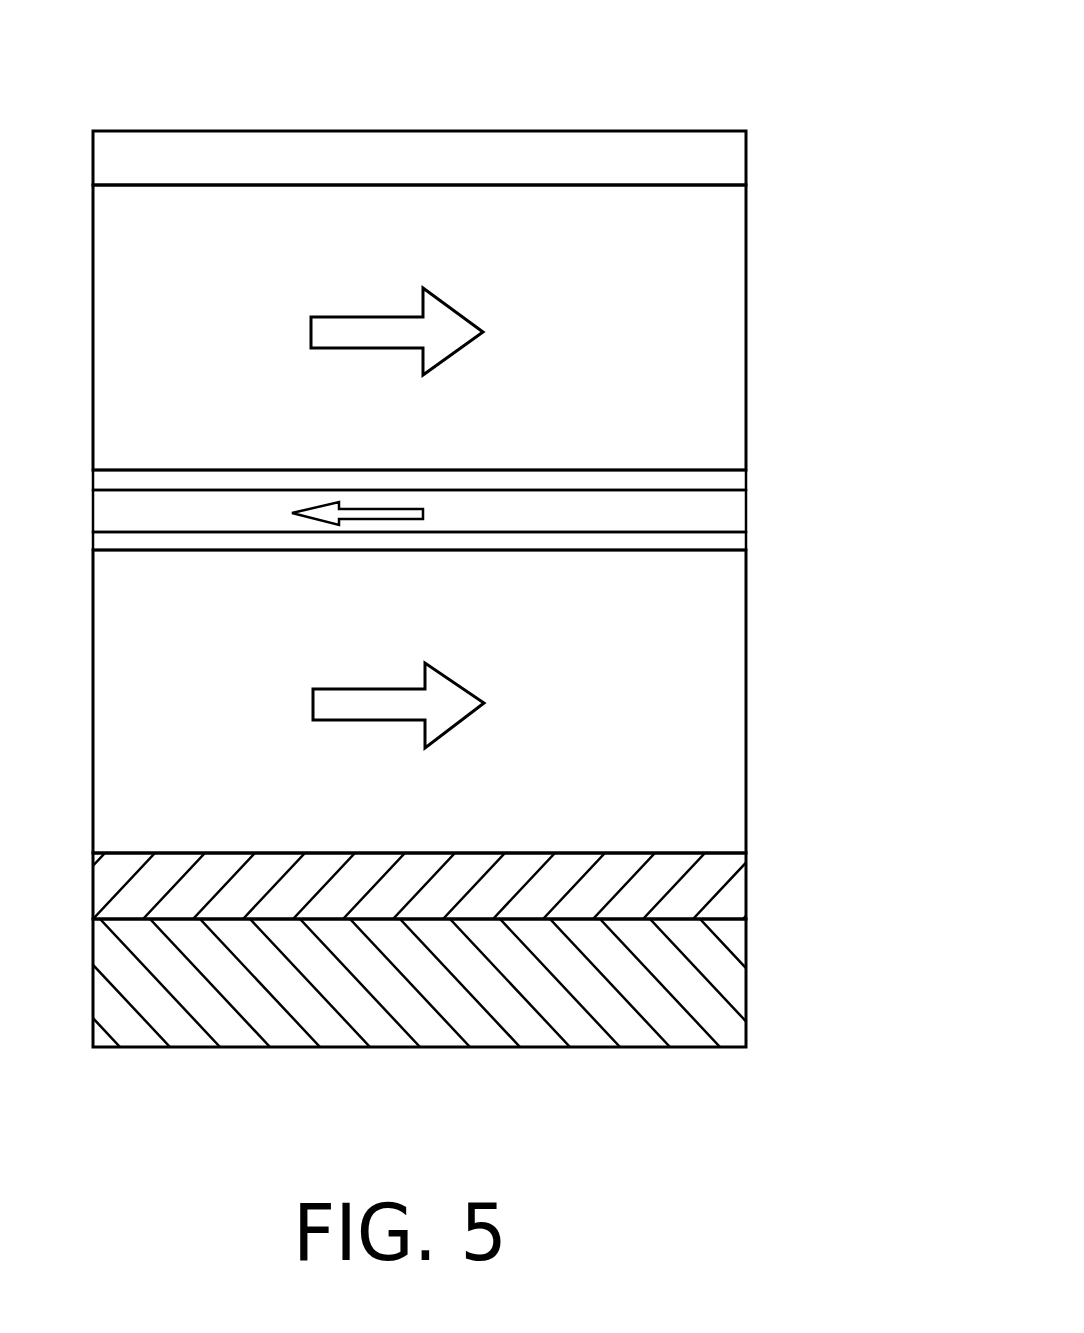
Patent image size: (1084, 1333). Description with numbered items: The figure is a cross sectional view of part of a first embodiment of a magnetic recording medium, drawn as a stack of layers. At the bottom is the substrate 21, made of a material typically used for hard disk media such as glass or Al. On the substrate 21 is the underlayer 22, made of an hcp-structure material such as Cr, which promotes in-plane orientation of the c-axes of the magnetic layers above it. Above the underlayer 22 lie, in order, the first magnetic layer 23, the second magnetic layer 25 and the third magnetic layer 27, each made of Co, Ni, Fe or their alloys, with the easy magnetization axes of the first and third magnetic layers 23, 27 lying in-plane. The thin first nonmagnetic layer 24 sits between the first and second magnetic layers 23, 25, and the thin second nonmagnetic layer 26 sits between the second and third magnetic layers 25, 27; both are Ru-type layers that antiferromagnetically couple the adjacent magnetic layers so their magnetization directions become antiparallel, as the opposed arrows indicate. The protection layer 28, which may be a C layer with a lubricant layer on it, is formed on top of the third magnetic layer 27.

The substrate 21 is at (747, 975).
The underlayer 22 is at (747, 880).
The first magnetic layer 23 is at (746, 690).
The first nonmagnetic layer 24 is at (766, 543).
The second magnetic layer 25 is at (746, 512).
The second nonmagnetic layer 26 is at (766, 475).
The third magnetic layer 27 is at (746, 337).
The protection layer 28 is at (671, 131).